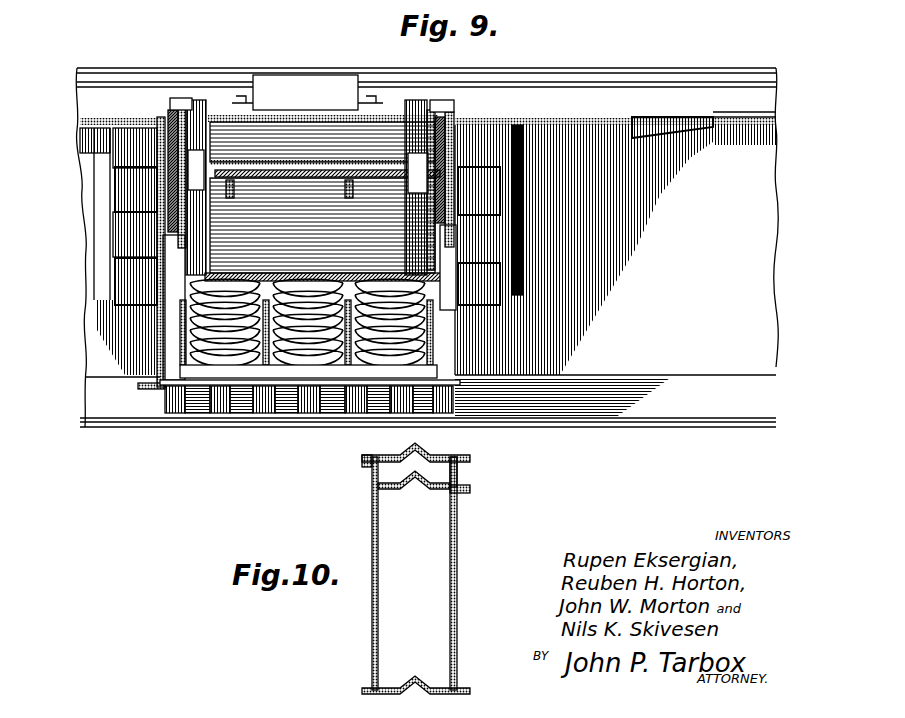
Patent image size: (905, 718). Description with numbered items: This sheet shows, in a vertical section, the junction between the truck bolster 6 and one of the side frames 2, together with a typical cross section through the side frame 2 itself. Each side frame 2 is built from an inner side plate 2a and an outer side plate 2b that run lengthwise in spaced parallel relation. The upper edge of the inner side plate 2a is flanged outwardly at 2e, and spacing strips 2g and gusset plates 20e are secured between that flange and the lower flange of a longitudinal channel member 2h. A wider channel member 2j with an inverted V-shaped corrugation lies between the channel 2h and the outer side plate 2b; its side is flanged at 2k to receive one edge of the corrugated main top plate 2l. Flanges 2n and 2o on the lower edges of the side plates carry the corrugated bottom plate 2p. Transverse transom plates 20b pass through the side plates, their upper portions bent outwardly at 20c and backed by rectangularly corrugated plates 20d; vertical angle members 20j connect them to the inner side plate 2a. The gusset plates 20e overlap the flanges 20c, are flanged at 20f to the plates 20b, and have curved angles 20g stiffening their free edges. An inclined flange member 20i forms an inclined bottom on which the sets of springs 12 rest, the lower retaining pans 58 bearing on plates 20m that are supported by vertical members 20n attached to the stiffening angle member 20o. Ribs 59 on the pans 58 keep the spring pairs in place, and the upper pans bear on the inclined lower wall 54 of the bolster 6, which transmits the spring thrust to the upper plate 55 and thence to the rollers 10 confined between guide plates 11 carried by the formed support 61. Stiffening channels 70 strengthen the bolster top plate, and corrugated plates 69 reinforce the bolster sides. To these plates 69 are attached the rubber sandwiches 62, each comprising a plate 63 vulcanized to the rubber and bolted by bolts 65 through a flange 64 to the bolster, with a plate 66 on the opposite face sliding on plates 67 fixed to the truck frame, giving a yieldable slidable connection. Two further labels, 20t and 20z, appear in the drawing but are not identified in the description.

In FIG. 10, the side frame 2 is at (365, 615).
In FIG. 9, the inner side plate 2a is at (100, 377).
In FIG. 10, the inner side plate 2a is at (457, 570).
In FIG. 10, the outer side plate 2b is at (372, 540).
In FIG. 10, the outward flange 2e is at (462, 493).
In FIG. 10, the spacing strips 2g is at (470, 487).
In FIG. 9, the channel member 2h is at (643, 95).
In FIG. 10, the channel member 2h is at (458, 470).
In FIG. 10, the channel member 2j is at (398, 489).
In FIG. 10, the outward flange 2k is at (362, 467).
In FIG. 10, the main top plate 2l is at (432, 455).
In FIG. 9, the outwardly formed flange 2n is at (765, 427).
In FIG. 10, the outwardly formed flange 2n is at (462, 688).
In FIG. 10, the outwardly formed flange 2o is at (368, 688).
In FIG. 9, the bottom plate 2p is at (738, 427).
In FIG. 10, the bottom plate 2p is at (432, 686).
In FIG. 9, the bolster 6 is at (368, 108).
In FIG. 9, the rollers 10 is at (337, 73).
In FIG. 9, the guide plates 11 is at (350, 75).
In FIG. 9, the springs 12 is at (235, 345).
In FIG. 9, the inclined lower wall 54 is at (320, 275).
In FIG. 9, the upper plate 55 is at (320, 175).
In FIG. 9, the retaining pan 58 is at (262, 380).
In FIG. 9, the ribs 59 is at (125, 393).
In FIG. 9, the formed support 61 is at (275, 130).
In FIG. 9, the rubber sandwiches 62 is at (488, 65).
In FIG. 9, the plate 63 is at (175, 105).
In FIG. 9, the flange 64 is at (208, 108).
In FIG. 9, the bolts 65 is at (197, 108).
In FIG. 9, the plate 66 is at (130, 112).
In FIG. 9, the plates 67 is at (150, 230).
In FIG. 9, the corrugated plates 69 is at (417, 195).
In FIG. 9, the stiffening channels 70 is at (350, 188).
In FIG. 9, the transverse plates 20b is at (160, 330).
In FIG. 9, the outwardly bent upper portions 20c is at (520, 135).
In FIG. 9, the corrugated plates 20d is at (505, 182).
In FIG. 9, the gusset plates 20e is at (80, 120).
In FIG. 9, the gusset flanges 20f is at (118, 147).
In FIG. 9, the curved angles 20g is at (640, 132).
In FIG. 9, the inclined flange member 20i is at (150, 135).
In FIG. 9, the vertical angle members 20j is at (115, 282).
In FIG. 9, the plates 20m is at (175, 412).
In FIG. 9, the vertical members 20n is at (195, 412).
In FIG. 9, the angle member 20o is at (80, 330).
In FIG. 9, the casting rib 20t is at (405, 135).
In FIG. 9, the casting top 20z is at (120, 78).